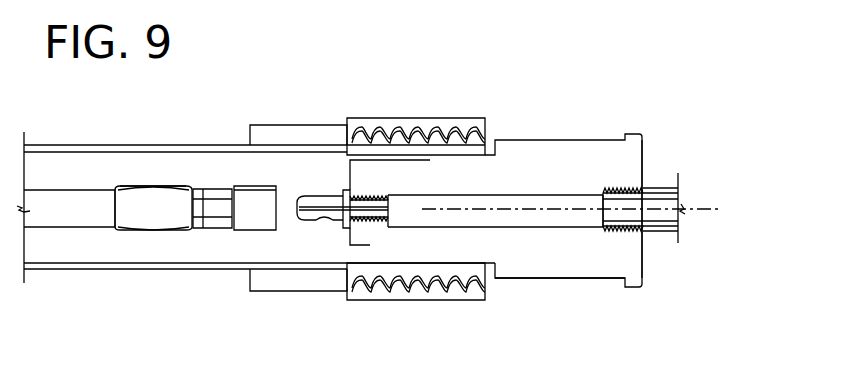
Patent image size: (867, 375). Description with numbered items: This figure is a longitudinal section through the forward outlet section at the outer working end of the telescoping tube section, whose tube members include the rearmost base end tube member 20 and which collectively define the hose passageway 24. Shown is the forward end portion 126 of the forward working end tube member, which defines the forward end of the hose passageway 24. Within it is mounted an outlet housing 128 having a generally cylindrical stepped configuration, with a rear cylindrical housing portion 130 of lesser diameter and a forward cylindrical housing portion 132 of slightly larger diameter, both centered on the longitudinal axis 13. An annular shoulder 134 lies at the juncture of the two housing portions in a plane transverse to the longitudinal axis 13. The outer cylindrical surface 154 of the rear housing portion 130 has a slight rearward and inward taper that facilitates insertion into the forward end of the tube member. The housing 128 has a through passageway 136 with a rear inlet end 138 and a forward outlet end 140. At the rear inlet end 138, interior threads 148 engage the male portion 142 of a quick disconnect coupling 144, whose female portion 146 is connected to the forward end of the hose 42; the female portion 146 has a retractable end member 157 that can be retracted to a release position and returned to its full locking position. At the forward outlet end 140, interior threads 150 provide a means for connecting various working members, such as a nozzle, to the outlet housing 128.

The rearmost base end tube member 20 is at (88, 148).
The hose 42 is at (55, 198).
The forward end portion 126 is at (187, 148).
The hose passageway 24 is at (133, 167).
The female portion of the quick disconnect coupling 146 is at (202, 220).
The quick disconnect coupling 144 is at (255, 195).
The retractable end member 157 is at (252, 220).
The male portion of the quick disconnect coupling 142 is at (320, 197).
The interior threads 148 is at (363, 198).
The rear cylindrical housing portion 130 is at (350, 245).
The outer cylindrical surface 154 is at (387, 262).
The rear inlet end 138 is at (403, 197).
The annular shoulder 134 is at (470, 288).
The interior threads 150 is at (620, 188).
The outlet housing 128 is at (527, 147).
The forward outlet end 140 is at (590, 200).
The through passageway 136 is at (570, 215).
The forward cylindrical housing portion 132 is at (553, 263).
The longitudinal axis 13 is at (716, 211).